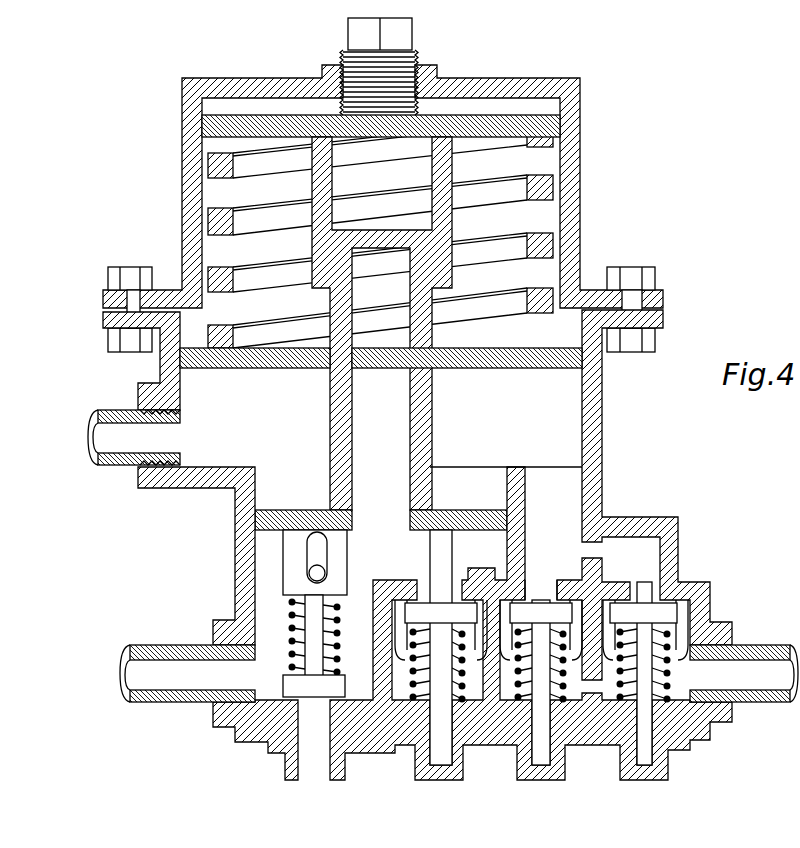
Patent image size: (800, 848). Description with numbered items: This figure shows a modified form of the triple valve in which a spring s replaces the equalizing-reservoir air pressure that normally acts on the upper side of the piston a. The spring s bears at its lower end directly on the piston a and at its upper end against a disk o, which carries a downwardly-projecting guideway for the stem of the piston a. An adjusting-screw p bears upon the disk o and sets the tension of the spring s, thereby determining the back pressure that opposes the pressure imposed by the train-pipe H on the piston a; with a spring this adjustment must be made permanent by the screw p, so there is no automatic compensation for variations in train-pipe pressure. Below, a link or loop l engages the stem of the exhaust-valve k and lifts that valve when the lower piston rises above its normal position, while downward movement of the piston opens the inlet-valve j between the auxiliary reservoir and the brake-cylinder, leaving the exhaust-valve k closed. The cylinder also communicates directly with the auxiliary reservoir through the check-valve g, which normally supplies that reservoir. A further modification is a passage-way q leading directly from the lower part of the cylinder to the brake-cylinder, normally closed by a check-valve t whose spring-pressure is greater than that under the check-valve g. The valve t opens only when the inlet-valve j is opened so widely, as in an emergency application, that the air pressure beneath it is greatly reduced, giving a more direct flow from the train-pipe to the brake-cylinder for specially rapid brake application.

The adjusting-screw p is at (412, 25).
The disk o is at (462, 122).
The spring s is at (380, 234).
The piston a is at (381, 371).
The train-pipe H is at (134, 437).
The link or loop l is at (315, 603).
The exhaust-valve k is at (314, 687).
The inlet-valve j is at (441, 647).
The passage-way q is at (541, 591).
The check-valve t is at (541, 682).
The check-valve g is at (645, 673).